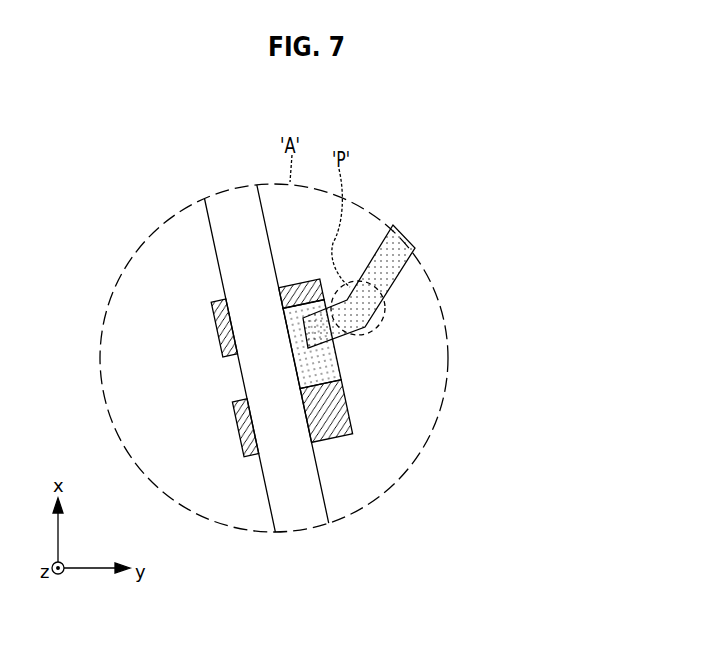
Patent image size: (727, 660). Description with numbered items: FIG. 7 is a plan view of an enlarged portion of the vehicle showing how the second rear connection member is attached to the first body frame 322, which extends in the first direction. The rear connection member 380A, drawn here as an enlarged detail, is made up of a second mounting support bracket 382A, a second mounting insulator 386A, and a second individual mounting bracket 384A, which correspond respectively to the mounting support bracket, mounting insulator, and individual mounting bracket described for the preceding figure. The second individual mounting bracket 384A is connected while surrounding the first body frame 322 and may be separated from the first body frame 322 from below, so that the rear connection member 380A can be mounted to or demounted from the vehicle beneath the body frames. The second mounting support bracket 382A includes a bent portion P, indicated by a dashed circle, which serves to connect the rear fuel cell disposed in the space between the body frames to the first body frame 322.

The first body frame 322 is at (233, 242).
The rear connection member 380A is at (430, 333).
The second mounting support bracket 382A is at (407, 286).
The second mounting insulator 386A is at (328, 363).
The second individual mounting bracket 384A is at (338, 410).